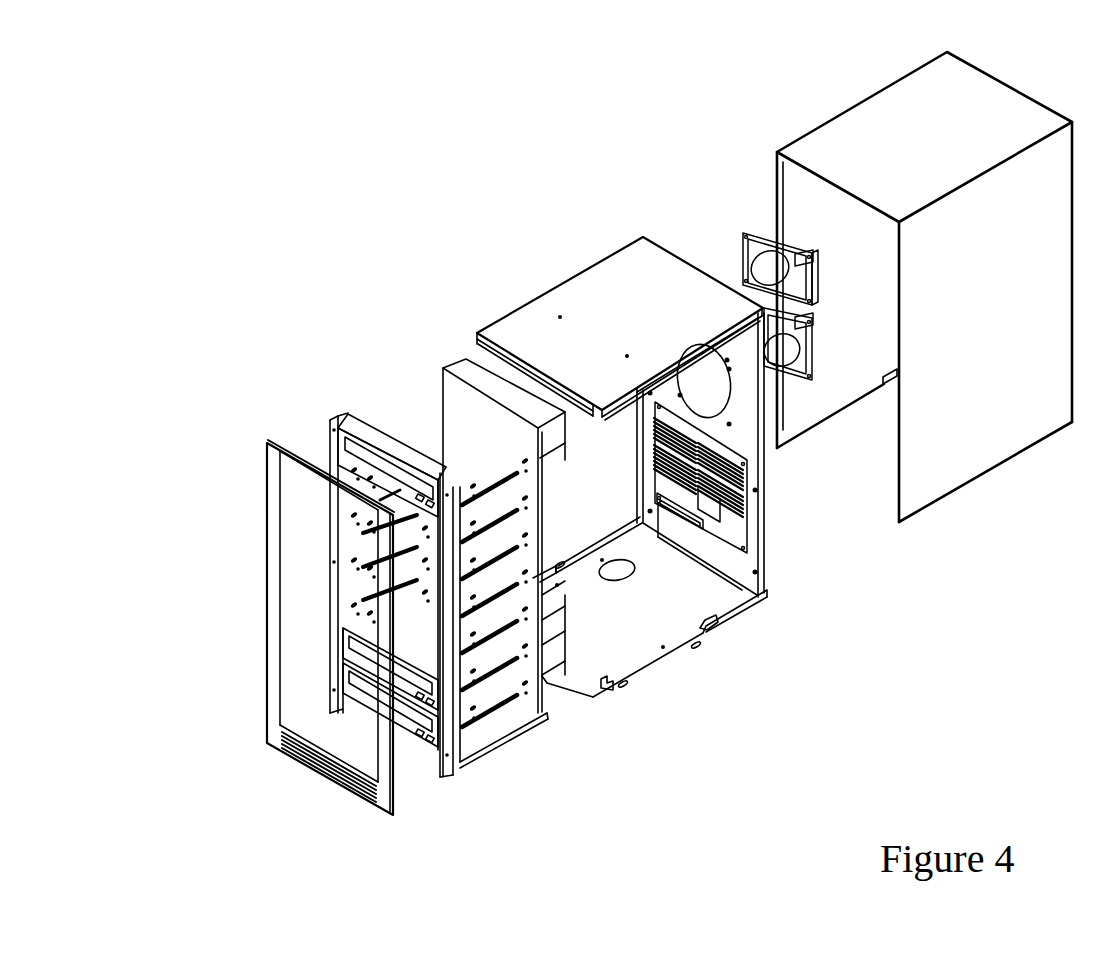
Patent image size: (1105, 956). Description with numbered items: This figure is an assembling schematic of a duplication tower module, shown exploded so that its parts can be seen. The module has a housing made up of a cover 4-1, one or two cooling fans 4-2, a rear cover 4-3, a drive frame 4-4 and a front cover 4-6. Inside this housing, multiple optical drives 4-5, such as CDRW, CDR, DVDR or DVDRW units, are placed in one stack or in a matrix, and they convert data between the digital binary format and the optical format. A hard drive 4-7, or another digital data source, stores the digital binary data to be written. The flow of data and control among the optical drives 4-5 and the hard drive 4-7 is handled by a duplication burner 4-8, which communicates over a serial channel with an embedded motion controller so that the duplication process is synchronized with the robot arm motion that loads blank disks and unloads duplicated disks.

The cover 4-1 is at (967, 483).
The cooling fans 4-2 is at (758, 228).
The rear cover 4-3 is at (577, 303).
The drive frame 4-4 is at (492, 540).
The optical drives 4-5 is at (372, 433).
The front cover 4-6 is at (275, 463).
The hard drive 4-7 is at (543, 713).
The duplication burner 4-8 is at (740, 553).